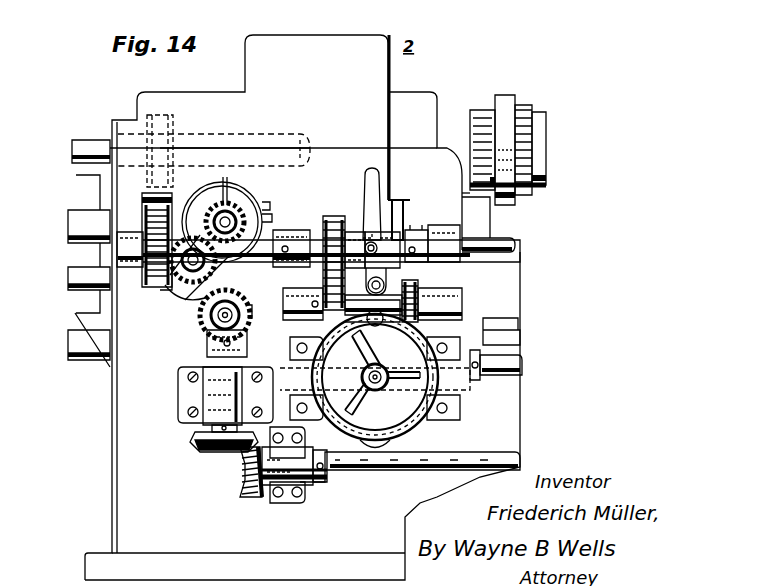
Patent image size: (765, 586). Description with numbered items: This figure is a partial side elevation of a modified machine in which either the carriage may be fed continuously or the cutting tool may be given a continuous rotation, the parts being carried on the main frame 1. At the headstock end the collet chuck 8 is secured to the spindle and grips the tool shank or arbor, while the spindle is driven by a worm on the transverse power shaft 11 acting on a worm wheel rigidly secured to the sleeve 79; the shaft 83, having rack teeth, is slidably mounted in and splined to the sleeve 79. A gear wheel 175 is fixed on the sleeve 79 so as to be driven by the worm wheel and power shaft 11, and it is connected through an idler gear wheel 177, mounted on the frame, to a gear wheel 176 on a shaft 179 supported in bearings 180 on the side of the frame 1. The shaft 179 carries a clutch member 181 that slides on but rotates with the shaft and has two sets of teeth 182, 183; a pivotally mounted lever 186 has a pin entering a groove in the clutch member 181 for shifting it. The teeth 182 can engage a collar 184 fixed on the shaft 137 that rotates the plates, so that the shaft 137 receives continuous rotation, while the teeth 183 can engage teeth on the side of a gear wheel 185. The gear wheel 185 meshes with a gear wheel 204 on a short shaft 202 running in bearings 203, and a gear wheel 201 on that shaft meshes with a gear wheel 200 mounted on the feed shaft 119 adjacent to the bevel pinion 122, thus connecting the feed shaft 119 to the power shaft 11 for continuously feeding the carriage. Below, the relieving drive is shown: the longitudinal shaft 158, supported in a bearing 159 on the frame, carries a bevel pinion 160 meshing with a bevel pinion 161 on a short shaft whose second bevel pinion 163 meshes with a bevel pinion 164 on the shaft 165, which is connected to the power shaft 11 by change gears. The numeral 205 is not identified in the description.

The main frame 1 is at (112, 512).
The collet chuck 8 is at (535, 115).
The power shaft 11 is at (237, 218).
The sleeve 79 is at (210, 132).
The shaft 83 is at (82, 138).
The feed shaft 119 is at (508, 360).
The bevel pinion 122 is at (375, 379).
The shaft 137 is at (508, 244).
The longitudinal shaft 158 is at (348, 474).
The bearing 159 is at (295, 500).
The bevel pinion 160 is at (245, 490).
The bevel pinion 161 is at (215, 452).
The bevel pinion 163 is at (207, 347).
The bevel pinion 164 is at (214, 315).
The shaft 165 is at (178, 322).
The gear wheel 175 is at (158, 113).
The gear wheel 176 is at (168, 292).
The idler gear wheel 177 is at (142, 205).
The shaft 179 is at (212, 267).
The bearings 180 is at (134, 268).
The clutch member 181 is at (383, 242).
The clutch teeth 182 is at (415, 230).
The clutch teeth 183 is at (345, 222).
The collar 184 is at (418, 230).
The gear wheel 185 is at (340, 230).
The lever 186 is at (378, 182).
The gear wheel 200 is at (408, 430).
The gear wheel 201 is at (420, 290).
The short shaft 202 is at (388, 305).
The bearings 203 is at (455, 300).
The gear wheel 204 is at (325, 290).
The key 205 is at (265, 300).